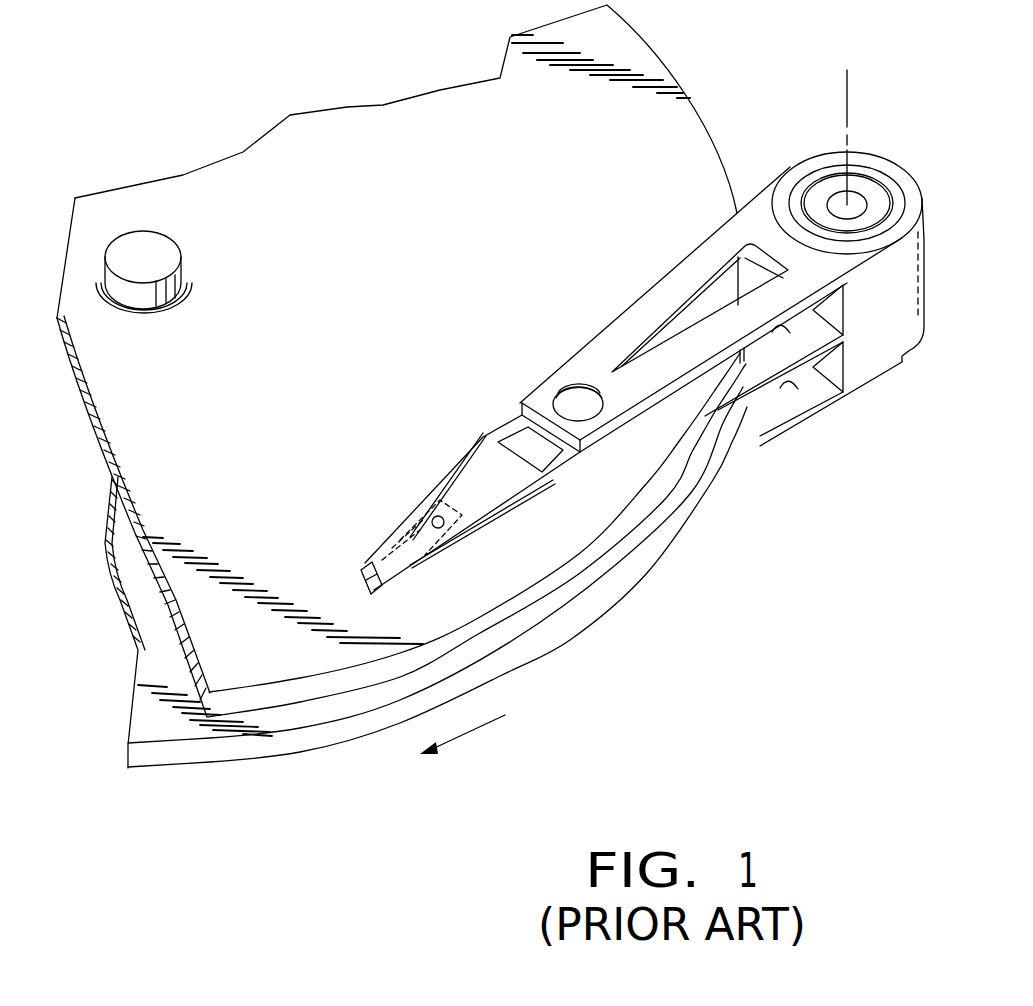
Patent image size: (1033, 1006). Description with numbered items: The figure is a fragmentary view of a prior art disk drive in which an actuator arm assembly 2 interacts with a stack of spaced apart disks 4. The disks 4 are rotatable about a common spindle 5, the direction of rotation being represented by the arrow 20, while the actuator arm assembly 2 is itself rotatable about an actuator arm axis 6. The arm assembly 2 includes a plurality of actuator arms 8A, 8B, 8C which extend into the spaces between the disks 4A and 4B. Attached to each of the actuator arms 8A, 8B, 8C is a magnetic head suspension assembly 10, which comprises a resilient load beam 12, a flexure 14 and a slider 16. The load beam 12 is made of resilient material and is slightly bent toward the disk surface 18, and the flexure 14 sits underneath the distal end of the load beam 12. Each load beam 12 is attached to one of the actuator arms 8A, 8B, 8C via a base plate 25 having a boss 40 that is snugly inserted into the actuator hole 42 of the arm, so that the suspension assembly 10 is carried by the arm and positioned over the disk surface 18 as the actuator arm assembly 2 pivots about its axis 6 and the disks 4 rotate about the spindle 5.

The actuator arm assembly 2 is at (796, 140).
The disks 4 is at (185, 790).
The disk 4A is at (304, 345).
The disk 4B is at (349, 733).
The spindle 5 is at (167, 231).
The actuator arm axis 6 is at (847, 127).
The actuator arm 8A is at (637, 302).
The actuator arm 8B is at (752, 398).
The actuator arm 8C is at (810, 418).
The magnetic head suspension assembly 10 is at (476, 400).
The load beam 12 is at (453, 497).
The flexure 14 is at (412, 502).
The slider 16 is at (362, 576).
The disk surface 18 is at (502, 567).
The arrow 20 is at (473, 733).
The base plate 25 is at (617, 427).
The boss 40 is at (570, 390).
The actuator hole 42 is at (573, 383).